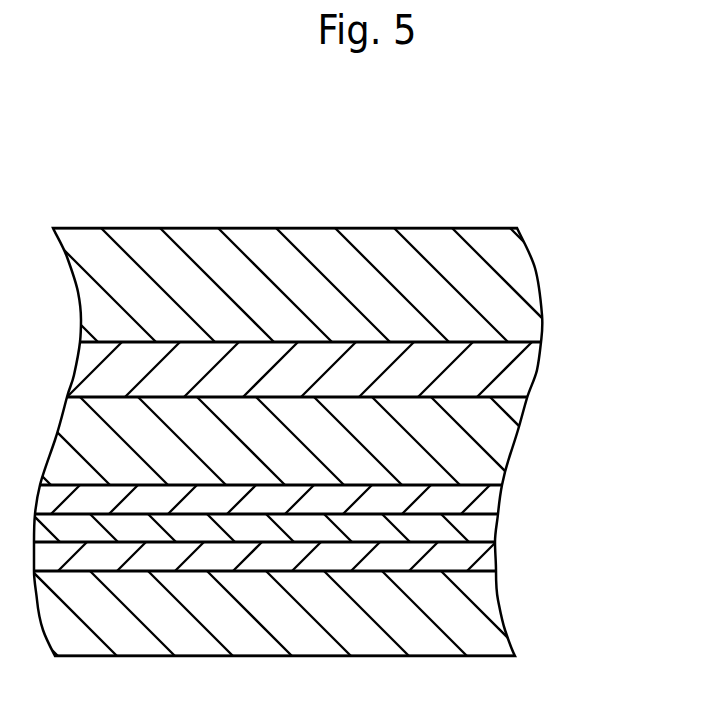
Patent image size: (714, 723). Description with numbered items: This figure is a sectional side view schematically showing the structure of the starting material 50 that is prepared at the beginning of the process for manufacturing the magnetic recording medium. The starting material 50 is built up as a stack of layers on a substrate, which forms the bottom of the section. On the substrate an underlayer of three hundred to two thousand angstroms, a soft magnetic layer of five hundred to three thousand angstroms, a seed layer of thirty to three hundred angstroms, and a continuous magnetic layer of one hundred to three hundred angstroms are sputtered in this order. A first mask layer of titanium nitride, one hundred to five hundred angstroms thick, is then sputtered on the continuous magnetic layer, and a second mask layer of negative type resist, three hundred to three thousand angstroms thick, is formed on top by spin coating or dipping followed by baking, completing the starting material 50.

The starting material 50 is at (255, 182).